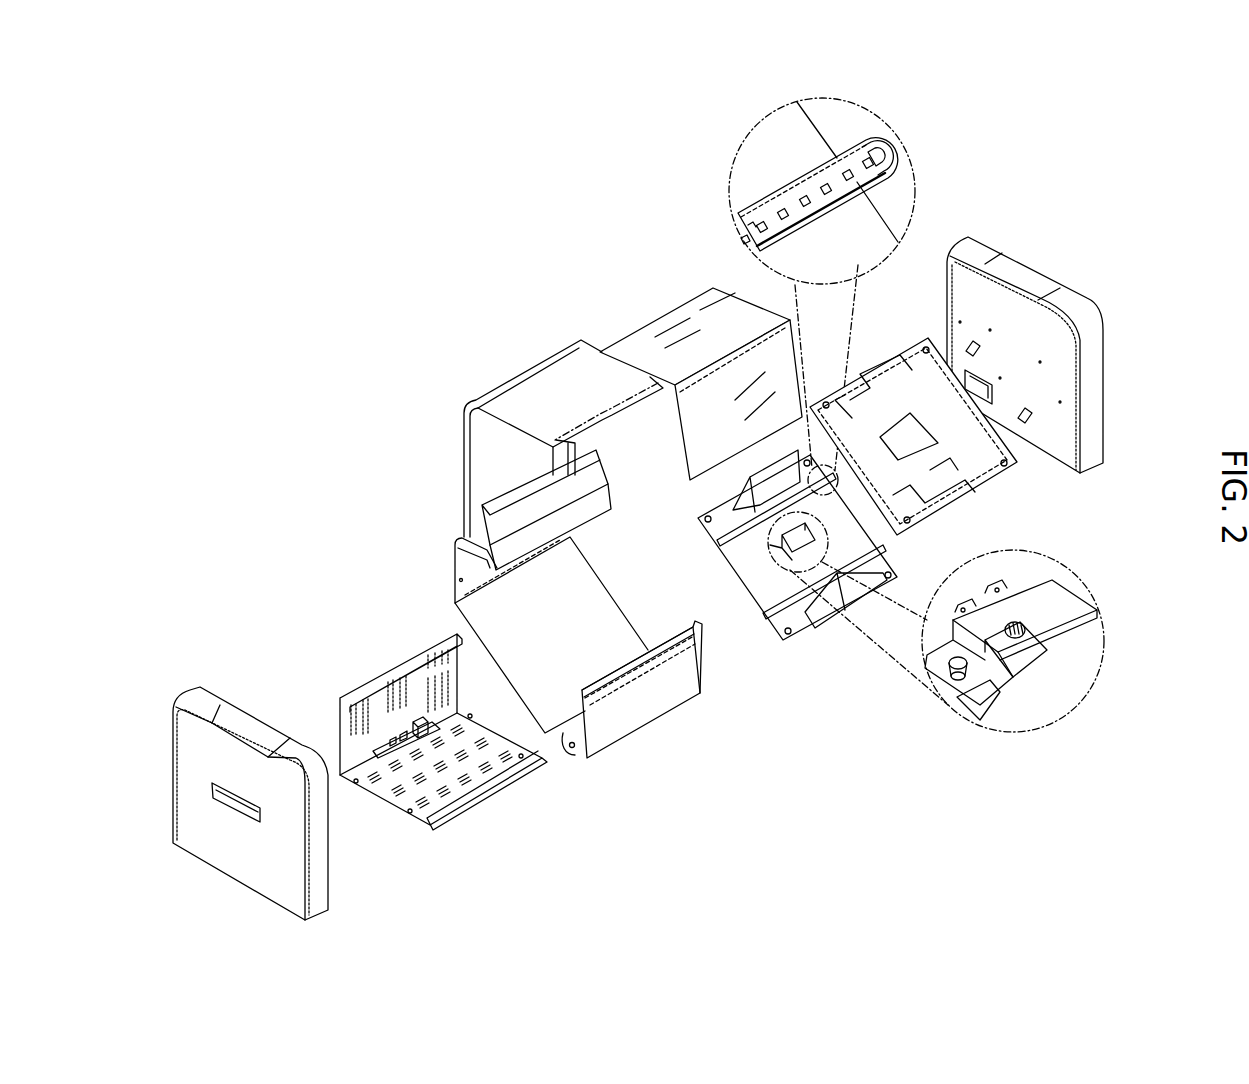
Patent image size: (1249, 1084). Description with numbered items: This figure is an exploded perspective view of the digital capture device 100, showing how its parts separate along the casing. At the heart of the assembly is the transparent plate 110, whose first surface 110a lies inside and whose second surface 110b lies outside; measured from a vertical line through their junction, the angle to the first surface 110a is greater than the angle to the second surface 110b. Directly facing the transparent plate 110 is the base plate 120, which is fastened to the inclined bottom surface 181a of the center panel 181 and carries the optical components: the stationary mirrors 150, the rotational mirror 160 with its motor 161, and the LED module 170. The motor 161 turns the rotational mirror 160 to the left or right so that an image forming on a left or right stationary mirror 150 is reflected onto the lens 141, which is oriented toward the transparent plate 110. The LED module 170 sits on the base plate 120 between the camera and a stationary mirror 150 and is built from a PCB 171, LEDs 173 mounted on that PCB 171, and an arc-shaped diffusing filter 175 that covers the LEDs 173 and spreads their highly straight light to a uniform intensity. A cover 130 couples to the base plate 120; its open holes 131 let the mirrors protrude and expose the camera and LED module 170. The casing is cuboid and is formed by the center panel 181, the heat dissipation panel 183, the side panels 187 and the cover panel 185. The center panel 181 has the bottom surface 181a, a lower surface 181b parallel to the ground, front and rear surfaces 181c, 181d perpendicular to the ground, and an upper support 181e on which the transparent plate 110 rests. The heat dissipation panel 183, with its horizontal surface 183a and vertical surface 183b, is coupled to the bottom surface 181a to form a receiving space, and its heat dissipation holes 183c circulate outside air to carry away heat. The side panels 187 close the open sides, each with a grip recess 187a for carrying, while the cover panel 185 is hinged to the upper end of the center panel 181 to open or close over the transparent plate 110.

The digital capture device 100 is at (315, 367).
The transparent plate 110 is at (683, 342).
The first surface 110a is at (640, 338).
The second surface 110b is at (763, 320).
The base plate 120 is at (798, 485).
The cover 130 is at (950, 411).
The open holes 131 is at (913, 437).
The lens 141 is at (1033, 623).
The stationary mirrors 150 is at (733, 507).
The rotational mirror 160 is at (1027, 635).
The motor 161 is at (955, 666).
The LED module 170 is at (806, 177).
The PCB 171 is at (858, 188).
The LEDs 173 is at (824, 185).
The diffusing filter 175 is at (855, 135).
The center panel 181 is at (550, 634).
The bottom surface 181a is at (587, 593).
The lower surface 181b is at (567, 733).
The front surface 181c is at (627, 710).
The rear surface 181d is at (472, 568).
The support 181e is at (490, 550).
The heat dissipation panel 183 is at (404, 727).
The horizontal surface 183a is at (390, 800).
The vertical surface 183b is at (337, 733).
The heat dissipation holes 183c is at (432, 782).
The cover panel 185 is at (543, 377).
The side panels 187 is at (643, 575).
The grip recess 187a is at (237, 800).